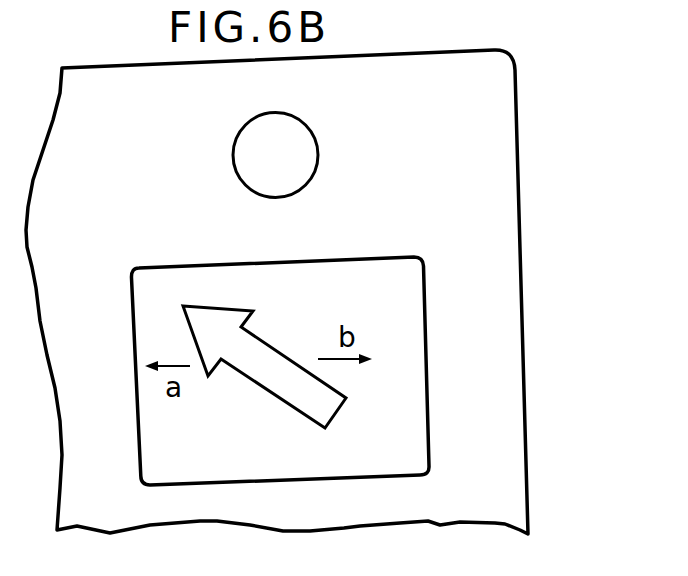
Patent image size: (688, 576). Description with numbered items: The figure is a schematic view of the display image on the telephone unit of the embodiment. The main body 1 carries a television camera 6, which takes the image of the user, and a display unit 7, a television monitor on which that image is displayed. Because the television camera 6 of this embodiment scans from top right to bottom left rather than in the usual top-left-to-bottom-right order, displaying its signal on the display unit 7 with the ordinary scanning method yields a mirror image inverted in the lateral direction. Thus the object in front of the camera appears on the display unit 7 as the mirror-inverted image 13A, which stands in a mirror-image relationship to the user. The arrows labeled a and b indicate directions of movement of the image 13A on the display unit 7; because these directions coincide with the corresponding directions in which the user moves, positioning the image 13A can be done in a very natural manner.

The main body 1 is at (477, 155).
The television camera 6 is at (317, 134).
The display unit 7 is at (424, 278).
The mirror-inverted image 13A is at (252, 378).